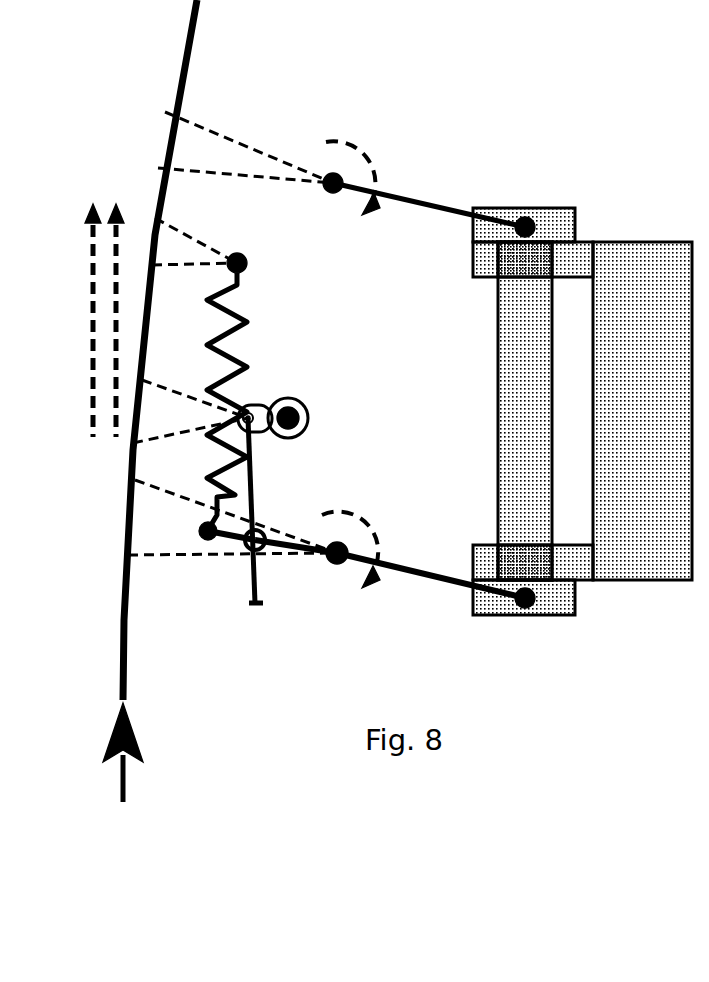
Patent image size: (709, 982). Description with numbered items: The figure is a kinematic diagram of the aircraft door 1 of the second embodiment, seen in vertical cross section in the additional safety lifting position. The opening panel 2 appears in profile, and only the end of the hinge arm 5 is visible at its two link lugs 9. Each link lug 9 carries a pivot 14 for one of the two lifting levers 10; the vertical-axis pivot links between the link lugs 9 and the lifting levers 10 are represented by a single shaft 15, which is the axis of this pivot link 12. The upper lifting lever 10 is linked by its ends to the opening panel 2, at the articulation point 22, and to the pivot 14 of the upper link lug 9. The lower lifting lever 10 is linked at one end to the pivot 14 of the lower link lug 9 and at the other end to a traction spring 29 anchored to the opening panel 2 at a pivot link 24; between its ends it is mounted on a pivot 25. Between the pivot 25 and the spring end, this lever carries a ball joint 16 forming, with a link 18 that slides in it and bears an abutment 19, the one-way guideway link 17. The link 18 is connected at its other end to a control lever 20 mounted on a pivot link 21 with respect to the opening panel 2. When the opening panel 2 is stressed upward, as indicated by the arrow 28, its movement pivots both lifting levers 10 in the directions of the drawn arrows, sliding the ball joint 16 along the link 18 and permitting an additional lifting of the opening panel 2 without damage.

The aircraft door 1 is at (470, 86).
The opening panel 2 is at (168, 93).
The hinge arm 5 is at (632, 585).
The link lug 9 is at (473, 262).
The lifting lever 10 is at (413, 200).
The pivot link 12 is at (548, 200).
The first pivot 14 is at (525, 210).
The shaft 15 is at (500, 468).
The ball joint 16 is at (265, 552).
The one-way guideway link 17 is at (243, 548).
The link 18 is at (260, 508).
The abutment 19 is at (258, 612).
The control lever 20 is at (310, 420).
The pivot link 21 is at (258, 405).
The articulation point 22 is at (331, 195).
The pivot link 24 is at (243, 255).
The pivot 25 is at (345, 570).
The direction of travel 28 is at (120, 777).
The traction spring 29 is at (245, 305).